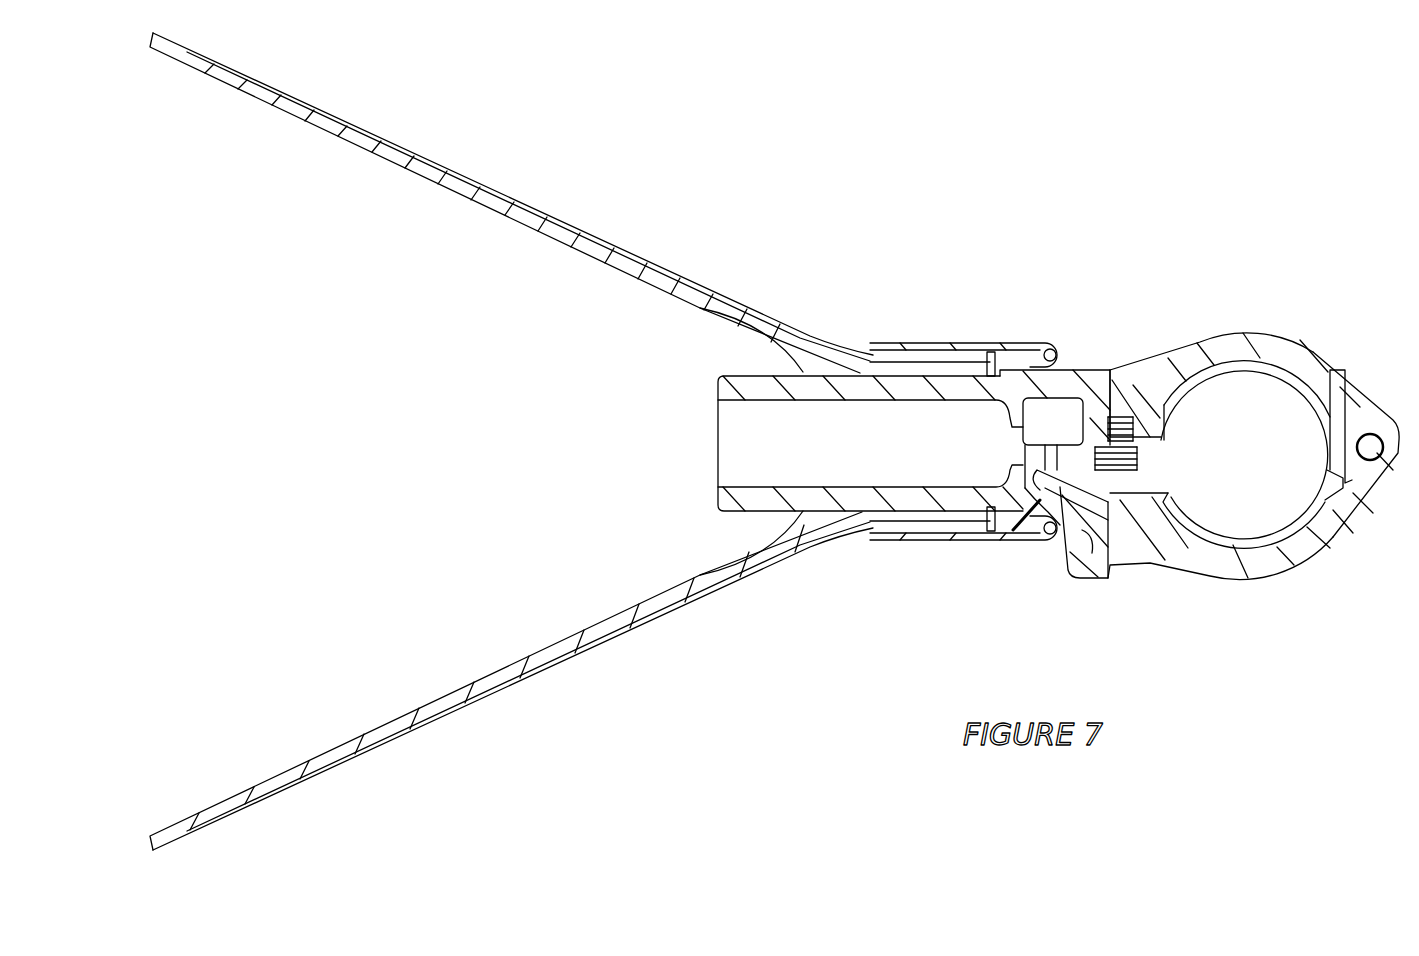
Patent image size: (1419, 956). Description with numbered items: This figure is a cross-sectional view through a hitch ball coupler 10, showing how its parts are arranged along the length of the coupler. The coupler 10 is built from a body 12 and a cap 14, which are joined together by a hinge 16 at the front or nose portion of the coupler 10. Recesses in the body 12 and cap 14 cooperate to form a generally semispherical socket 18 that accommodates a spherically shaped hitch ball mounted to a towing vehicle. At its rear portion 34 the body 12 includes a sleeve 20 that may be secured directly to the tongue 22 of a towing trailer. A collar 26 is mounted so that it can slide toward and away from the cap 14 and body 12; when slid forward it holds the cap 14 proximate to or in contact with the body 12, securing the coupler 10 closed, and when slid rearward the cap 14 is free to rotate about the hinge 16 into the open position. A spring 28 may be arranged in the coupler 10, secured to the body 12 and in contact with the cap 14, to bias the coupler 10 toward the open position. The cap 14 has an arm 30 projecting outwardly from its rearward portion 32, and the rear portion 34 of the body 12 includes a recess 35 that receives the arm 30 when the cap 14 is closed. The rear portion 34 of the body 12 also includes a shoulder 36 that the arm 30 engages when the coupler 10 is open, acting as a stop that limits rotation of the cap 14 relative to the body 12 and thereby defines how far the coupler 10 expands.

The hitch ball coupler 10 is at (1201, 184).
The body 12 is at (1213, 345).
The cap 14 is at (1227, 570).
The hinge 16 is at (1370, 434).
The socket 18 is at (1257, 482).
The sleeve 20 is at (723, 377).
The tongue 22 is at (489, 200).
The collar 26 is at (1012, 343).
The spring 28 is at (1122, 410).
The arm 30 is at (1063, 548).
The rearward portion of the cap 32 is at (1100, 572).
The rear portion of the body 34 is at (1122, 417).
The recess 35 is at (1040, 420).
The shoulder 36 is at (1027, 512).